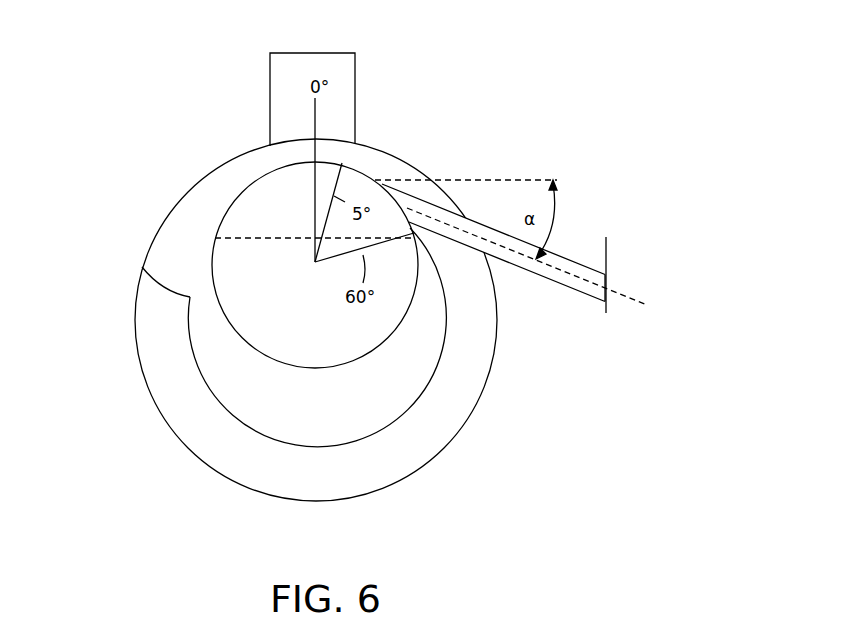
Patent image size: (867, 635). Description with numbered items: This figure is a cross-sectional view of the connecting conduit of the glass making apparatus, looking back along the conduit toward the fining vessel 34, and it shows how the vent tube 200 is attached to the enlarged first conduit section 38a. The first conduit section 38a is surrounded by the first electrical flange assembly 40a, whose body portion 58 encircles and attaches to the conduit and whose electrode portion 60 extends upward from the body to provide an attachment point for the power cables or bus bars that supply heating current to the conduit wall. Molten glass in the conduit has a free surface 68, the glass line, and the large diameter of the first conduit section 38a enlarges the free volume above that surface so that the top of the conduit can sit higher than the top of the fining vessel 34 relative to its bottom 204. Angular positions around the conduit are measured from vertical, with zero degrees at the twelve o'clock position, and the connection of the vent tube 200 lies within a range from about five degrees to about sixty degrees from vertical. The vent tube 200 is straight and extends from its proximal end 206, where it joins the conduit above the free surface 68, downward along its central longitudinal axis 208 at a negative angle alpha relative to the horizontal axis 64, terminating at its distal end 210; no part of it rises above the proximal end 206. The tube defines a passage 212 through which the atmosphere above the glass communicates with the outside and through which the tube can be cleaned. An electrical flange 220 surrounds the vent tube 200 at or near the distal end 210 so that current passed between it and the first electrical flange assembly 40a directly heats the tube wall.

The fining vessel 34 is at (142, 267).
The first conduit section 38a is at (245, 188).
The first electrical flange assembly 40a is at (131, 398).
The body portion 58 is at (460, 437).
The electrode portion 60 is at (355, 83).
The horizontal axis 64 is at (513, 180).
The free surface 68 is at (285, 237).
The vent tube 200 is at (551, 281).
The bottom 204 is at (317, 446).
The proximal end 206 is at (405, 192).
The central longitudinal axis 208 is at (637, 301).
The distal end 210 is at (590, 297).
The passage 212 is at (566, 270).
The electrical flange 220 is at (608, 257).